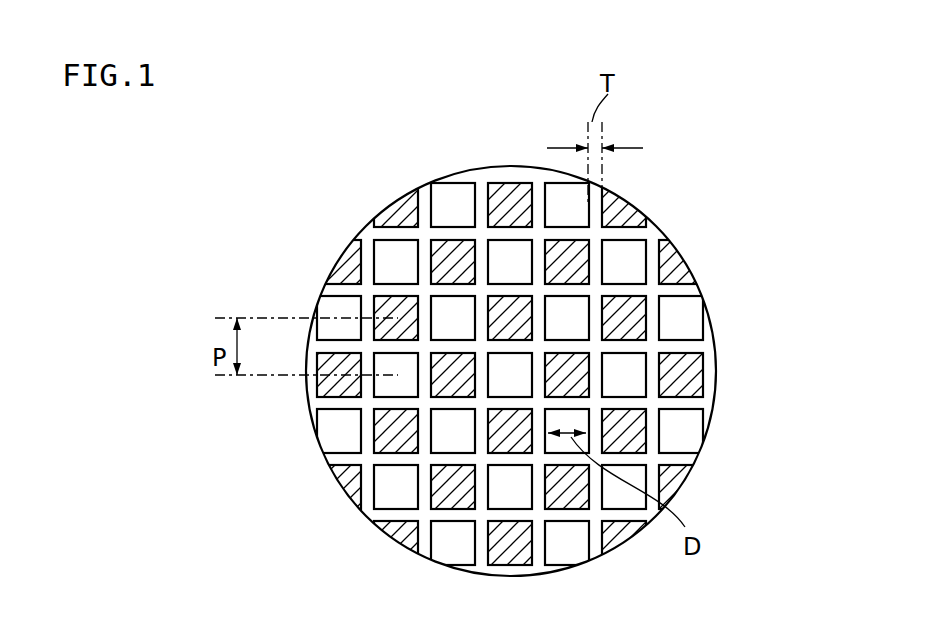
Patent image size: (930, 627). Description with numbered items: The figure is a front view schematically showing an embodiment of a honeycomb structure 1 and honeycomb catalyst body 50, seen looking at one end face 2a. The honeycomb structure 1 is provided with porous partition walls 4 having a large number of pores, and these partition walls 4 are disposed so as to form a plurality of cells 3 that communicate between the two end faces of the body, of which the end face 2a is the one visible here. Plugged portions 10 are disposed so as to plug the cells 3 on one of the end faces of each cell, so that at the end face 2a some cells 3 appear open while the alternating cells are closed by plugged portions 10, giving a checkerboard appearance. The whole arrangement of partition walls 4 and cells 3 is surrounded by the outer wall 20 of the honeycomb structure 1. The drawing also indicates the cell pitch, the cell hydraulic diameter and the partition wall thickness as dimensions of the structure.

The honeycomb structure 1 is at (514, 357).
The honeycomb catalyst body 50 is at (290, 305).
The end face 2a is at (672, 220).
The cell 3 is at (403, 278).
The partition wall 4 is at (597, 273).
The plugged portion 10 is at (396, 430).
The outer wall 20 is at (703, 328).